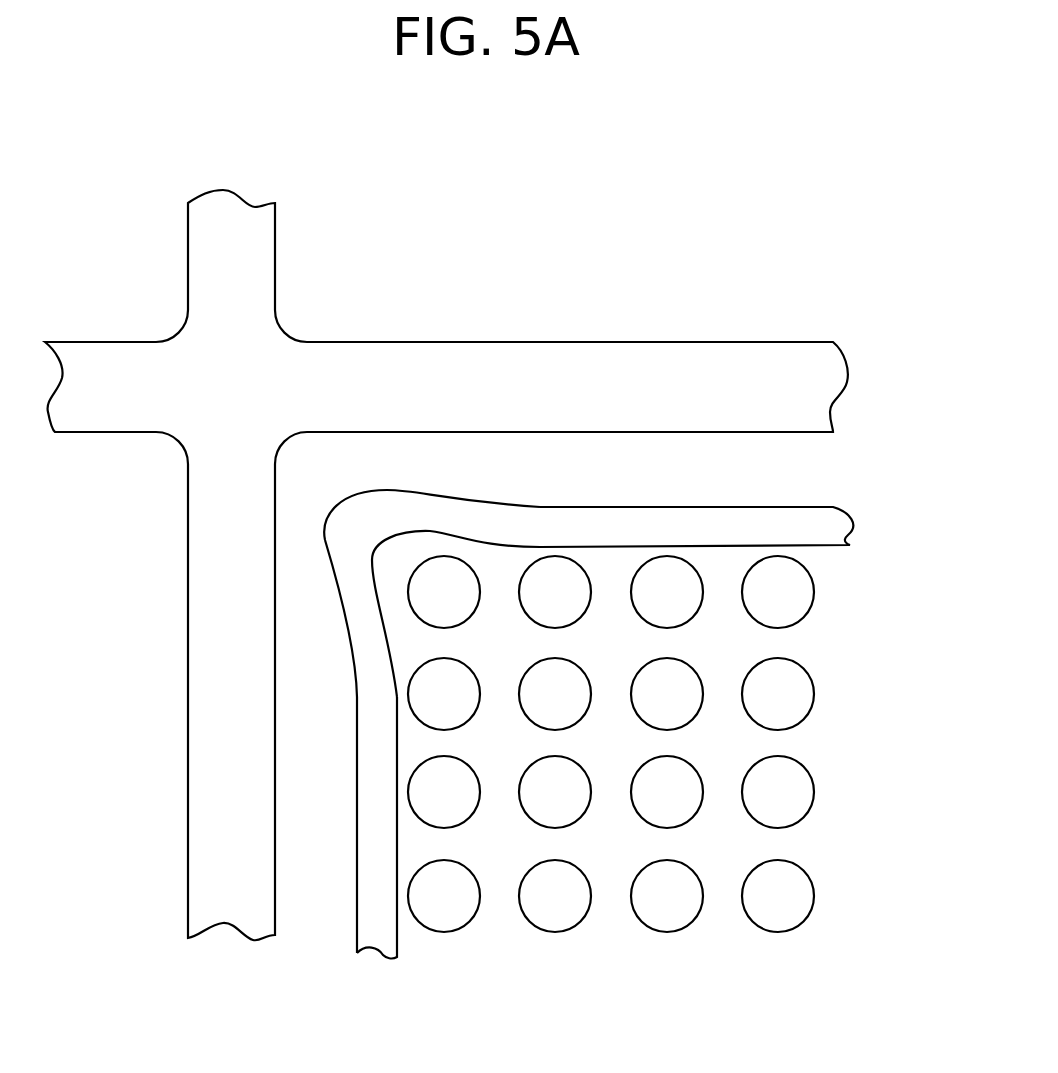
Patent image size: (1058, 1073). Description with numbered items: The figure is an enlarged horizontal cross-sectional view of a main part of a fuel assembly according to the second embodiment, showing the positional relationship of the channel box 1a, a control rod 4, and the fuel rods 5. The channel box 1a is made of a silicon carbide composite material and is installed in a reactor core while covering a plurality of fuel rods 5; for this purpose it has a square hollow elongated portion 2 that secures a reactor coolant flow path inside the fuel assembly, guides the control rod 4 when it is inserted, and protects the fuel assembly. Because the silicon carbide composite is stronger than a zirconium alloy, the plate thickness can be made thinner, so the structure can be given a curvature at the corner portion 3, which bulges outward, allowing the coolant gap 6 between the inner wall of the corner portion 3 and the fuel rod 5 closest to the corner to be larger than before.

The channel box 1a is at (860, 470).
The square hollow elongated portion 2 is at (832, 533).
The corner portion 3 is at (377, 517).
The control rod 4 is at (253, 275).
The fuel rods 5 is at (795, 692).
The coolant gap 6 is at (403, 548).